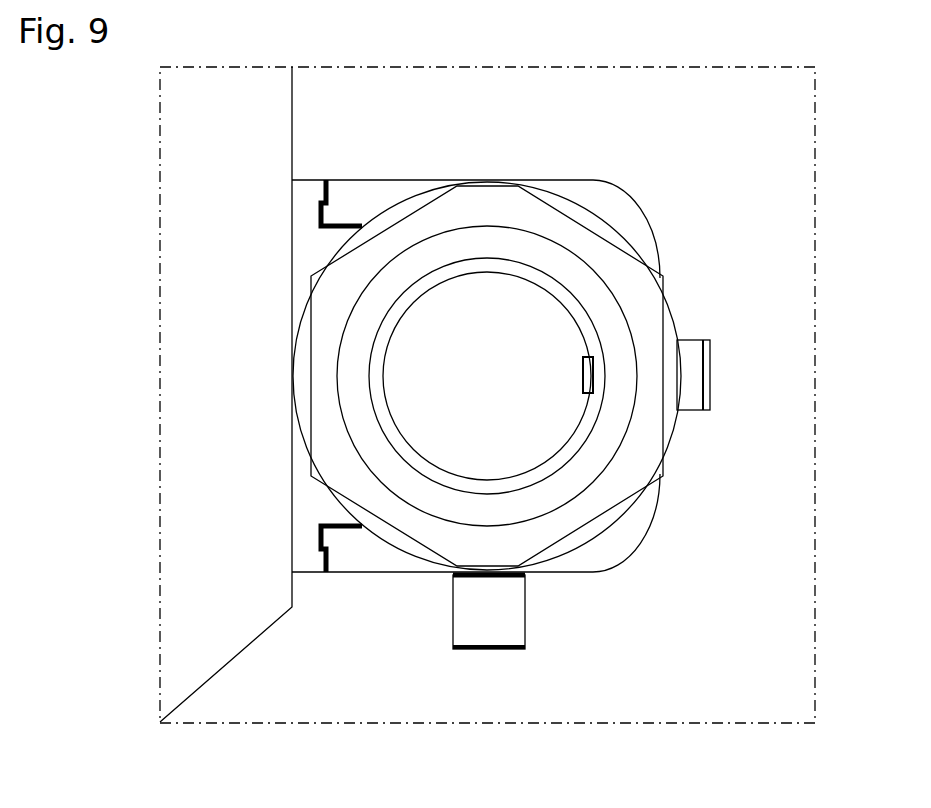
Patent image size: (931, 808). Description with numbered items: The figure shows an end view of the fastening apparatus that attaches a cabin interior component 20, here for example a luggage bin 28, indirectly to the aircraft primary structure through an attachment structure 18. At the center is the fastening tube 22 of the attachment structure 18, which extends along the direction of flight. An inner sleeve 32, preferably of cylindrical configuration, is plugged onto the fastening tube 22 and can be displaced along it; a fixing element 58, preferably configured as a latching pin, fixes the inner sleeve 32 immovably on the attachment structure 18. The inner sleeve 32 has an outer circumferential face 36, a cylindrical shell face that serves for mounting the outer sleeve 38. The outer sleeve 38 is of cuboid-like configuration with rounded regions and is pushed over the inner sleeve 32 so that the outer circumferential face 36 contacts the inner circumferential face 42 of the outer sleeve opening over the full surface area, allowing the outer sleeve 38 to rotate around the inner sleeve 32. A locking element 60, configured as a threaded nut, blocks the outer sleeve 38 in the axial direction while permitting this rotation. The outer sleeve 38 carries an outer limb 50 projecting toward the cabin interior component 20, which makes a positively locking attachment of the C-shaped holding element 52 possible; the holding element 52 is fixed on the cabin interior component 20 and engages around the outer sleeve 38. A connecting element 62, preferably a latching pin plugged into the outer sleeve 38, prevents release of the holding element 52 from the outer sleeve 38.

The attachment structure 18 is at (485, 376).
The fastening tube 22 is at (378, 375).
The cabin interior component 20 is at (308, 394).
The luggage bin 28 is at (278, 99).
The inner sleeve 32 is at (598, 300).
The outer circumferential face 36 is at (487, 376).
The inner circumferential face 42 is at (358, 302).
The outer sleeve 38 is at (627, 203).
The outer limb 50 is at (356, 203).
The holding element 52 is at (307, 260).
The fixing element 58 is at (693, 372).
The locking element 60 is at (633, 470).
The connecting element 62 is at (507, 620).